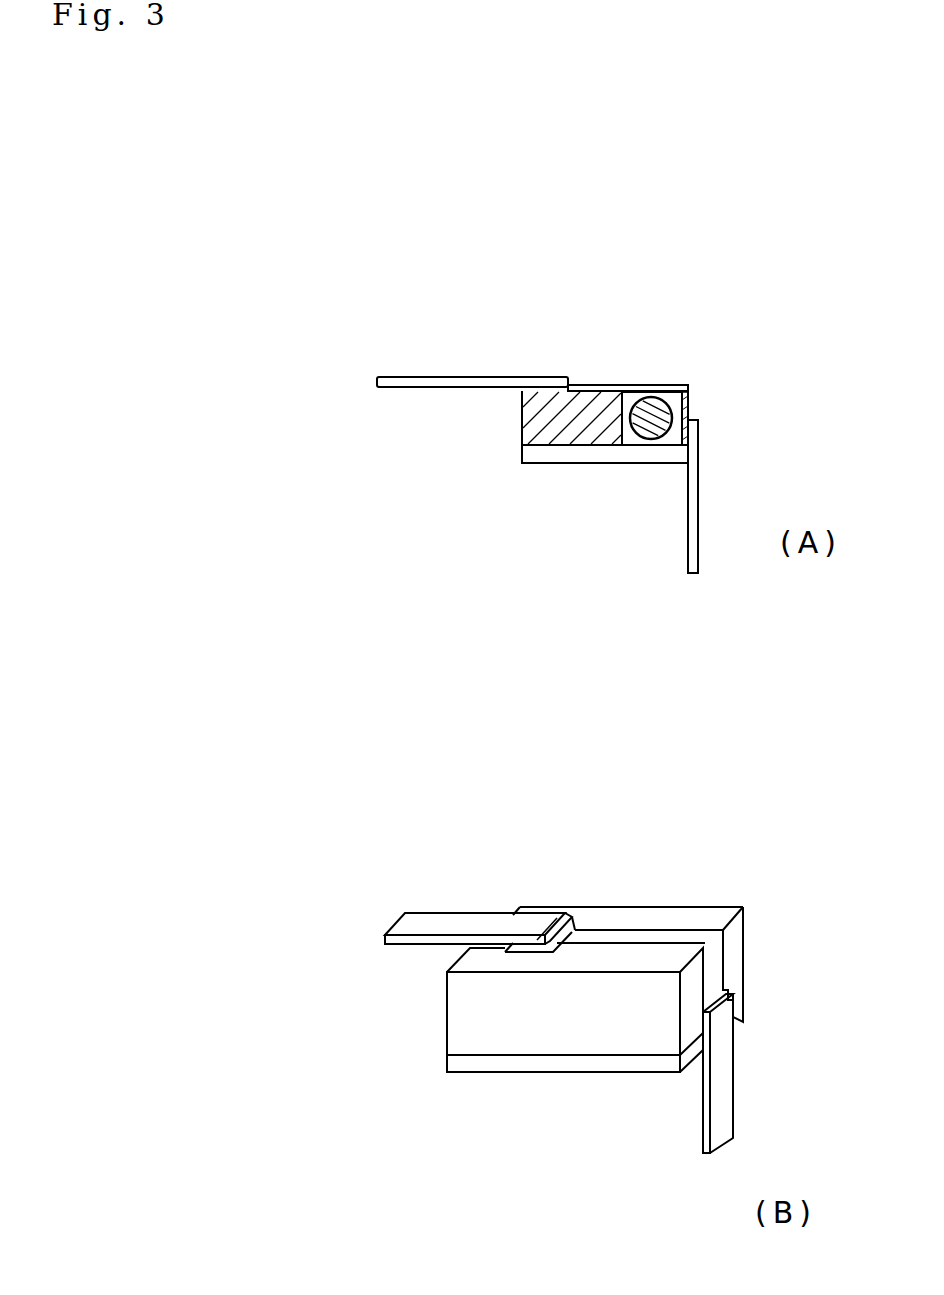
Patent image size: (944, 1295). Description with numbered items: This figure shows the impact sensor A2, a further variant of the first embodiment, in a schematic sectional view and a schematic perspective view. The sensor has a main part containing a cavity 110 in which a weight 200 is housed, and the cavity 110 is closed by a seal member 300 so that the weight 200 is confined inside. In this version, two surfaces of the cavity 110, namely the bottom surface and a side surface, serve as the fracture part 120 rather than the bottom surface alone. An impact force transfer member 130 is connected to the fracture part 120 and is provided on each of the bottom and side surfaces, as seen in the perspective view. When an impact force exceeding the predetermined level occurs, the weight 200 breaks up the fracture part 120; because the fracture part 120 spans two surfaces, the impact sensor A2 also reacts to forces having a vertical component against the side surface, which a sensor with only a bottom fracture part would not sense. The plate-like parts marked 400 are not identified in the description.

The plate (insert plate) 400 is at (405, 378).
The fracture part 120 is at (648, 388).
The impact sensor A2 is at (700, 368).
The cavity 110 is at (630, 450).
The weight 200 is at (660, 450).
The seal member 300 is at (540, 455).
The impact force transfer member 130 is at (618, 935).